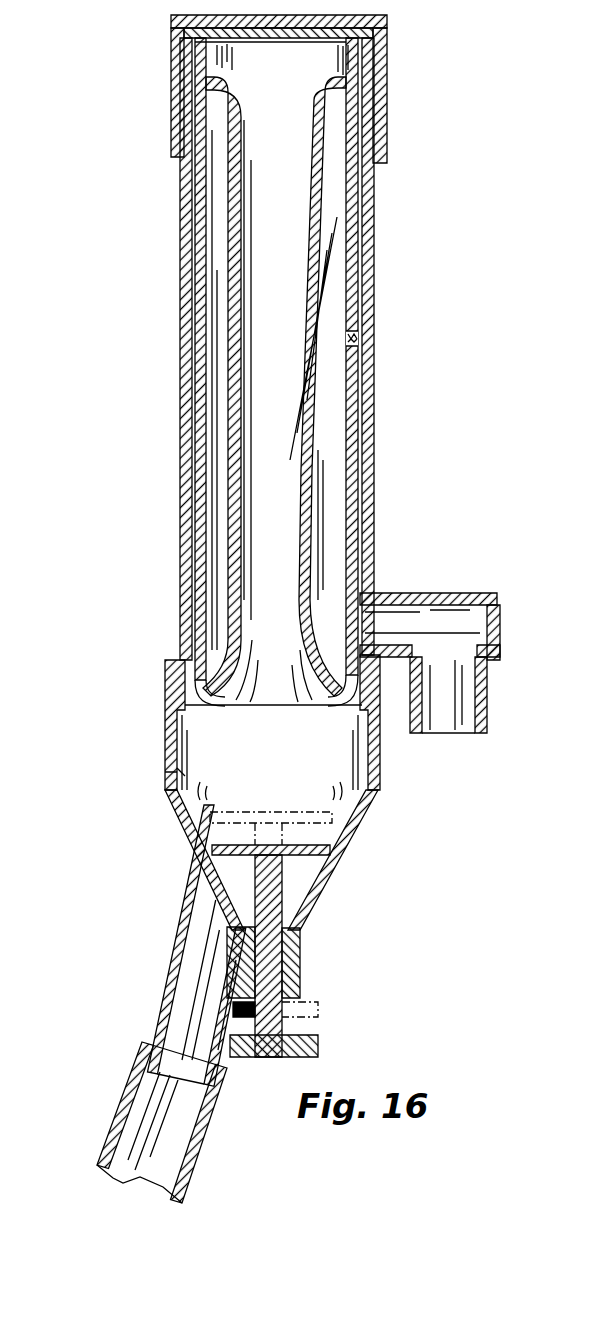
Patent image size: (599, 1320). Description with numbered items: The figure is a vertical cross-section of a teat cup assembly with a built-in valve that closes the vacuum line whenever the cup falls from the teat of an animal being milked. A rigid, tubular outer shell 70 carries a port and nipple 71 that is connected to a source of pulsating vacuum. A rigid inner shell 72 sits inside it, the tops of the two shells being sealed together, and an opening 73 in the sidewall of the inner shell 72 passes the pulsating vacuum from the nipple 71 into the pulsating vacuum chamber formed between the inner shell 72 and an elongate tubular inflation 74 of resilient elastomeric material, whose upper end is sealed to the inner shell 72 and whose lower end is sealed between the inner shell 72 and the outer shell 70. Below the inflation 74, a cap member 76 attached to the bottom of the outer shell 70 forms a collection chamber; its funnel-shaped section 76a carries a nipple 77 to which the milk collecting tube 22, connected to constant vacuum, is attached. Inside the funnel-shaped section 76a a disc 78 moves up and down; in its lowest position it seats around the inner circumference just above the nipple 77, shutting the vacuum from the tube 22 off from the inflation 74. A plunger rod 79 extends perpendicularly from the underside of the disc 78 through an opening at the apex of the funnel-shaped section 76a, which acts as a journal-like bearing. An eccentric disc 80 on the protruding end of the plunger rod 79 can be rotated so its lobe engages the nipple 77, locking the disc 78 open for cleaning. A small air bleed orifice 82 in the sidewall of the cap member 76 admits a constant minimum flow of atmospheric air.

The milk collecting tube 22 is at (140, 1077).
The outer shell 70 is at (182, 209).
The port and nipple 71 is at (457, 593).
The inner shell 72 is at (200, 318).
The opening 73 is at (355, 337).
The inflation 74 is at (228, 258).
The cap member 76 is at (167, 760).
The funnel-shaped section 76a is at (187, 833).
The nipple 77 is at (185, 965).
The disc 78 is at (317, 843).
The plunger rod 79 is at (283, 906).
The eccentric disc 80 is at (318, 1047).
The air bleed orifice 82 is at (165, 772).